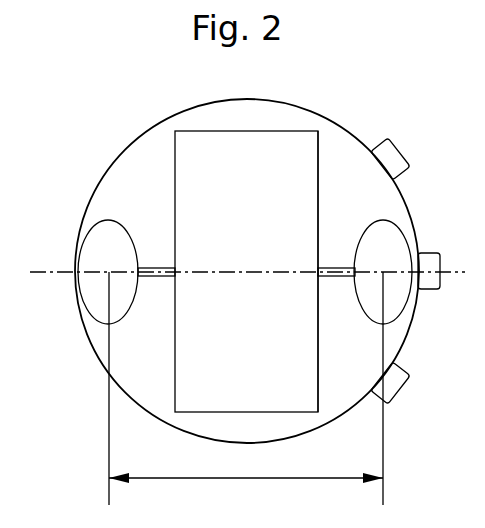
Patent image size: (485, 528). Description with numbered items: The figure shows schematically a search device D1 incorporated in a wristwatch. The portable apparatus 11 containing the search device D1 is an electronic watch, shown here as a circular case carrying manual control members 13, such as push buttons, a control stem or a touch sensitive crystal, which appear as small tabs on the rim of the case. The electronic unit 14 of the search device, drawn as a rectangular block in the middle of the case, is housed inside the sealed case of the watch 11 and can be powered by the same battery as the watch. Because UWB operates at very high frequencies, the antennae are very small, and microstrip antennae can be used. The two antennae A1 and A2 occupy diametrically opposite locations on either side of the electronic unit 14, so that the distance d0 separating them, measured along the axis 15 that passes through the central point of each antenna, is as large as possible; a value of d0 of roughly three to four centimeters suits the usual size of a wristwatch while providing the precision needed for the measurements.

The portable apparatus 11 is at (122, 100).
The manual control members 13 is at (425, 262).
The electronic unit 14 is at (190, 361).
The axis 15 is at (40, 272).
The antenna A1 is at (390, 300).
The antenna A2 is at (100, 245).
The search device D1 is at (340, 155).
The distance d0 is at (246, 388).